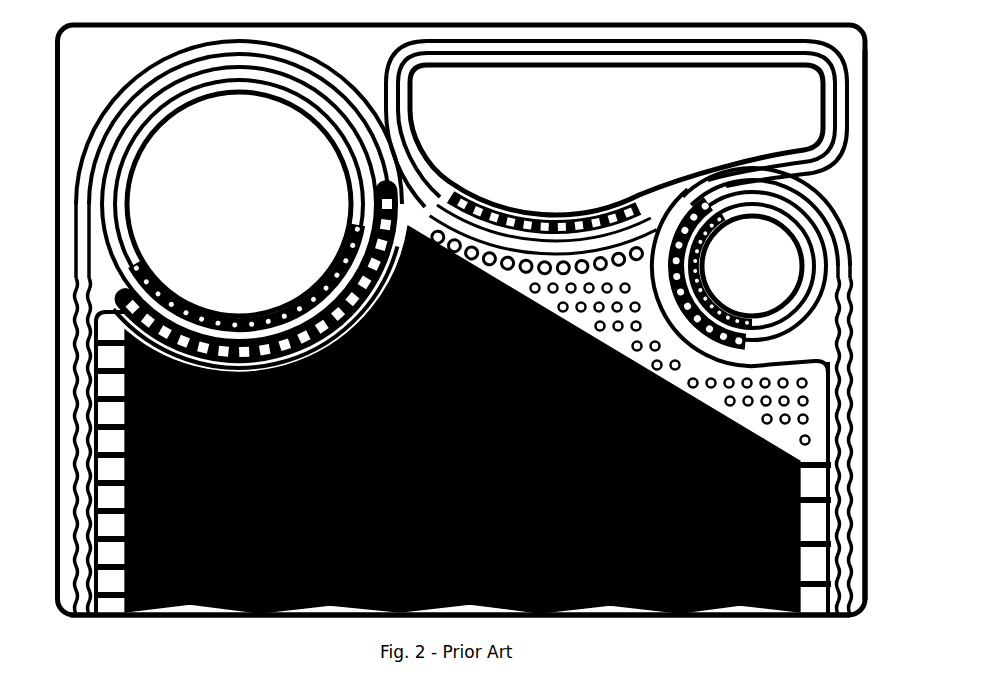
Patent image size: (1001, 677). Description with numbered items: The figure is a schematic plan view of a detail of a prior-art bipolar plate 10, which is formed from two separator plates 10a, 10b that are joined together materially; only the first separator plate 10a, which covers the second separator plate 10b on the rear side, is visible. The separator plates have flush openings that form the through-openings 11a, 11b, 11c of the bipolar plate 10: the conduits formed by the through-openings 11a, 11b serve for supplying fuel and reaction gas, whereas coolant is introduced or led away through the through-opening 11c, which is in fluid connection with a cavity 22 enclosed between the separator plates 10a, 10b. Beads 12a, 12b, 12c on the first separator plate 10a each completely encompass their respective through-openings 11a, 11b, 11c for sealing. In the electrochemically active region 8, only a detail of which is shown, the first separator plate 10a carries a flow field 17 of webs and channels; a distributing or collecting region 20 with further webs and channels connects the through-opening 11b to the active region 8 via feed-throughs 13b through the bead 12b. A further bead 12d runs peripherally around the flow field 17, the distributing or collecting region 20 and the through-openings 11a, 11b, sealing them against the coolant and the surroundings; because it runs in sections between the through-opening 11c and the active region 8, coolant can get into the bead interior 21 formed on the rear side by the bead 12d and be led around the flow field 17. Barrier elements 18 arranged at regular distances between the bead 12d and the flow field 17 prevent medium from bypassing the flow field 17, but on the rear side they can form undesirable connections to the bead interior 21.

The electrochemically active region 8 is at (44, 462).
The bipolar plate 10 is at (880, 167).
The first separator plate 10a is at (868, 591).
The second separator plate 10b is at (882, 540).
The through-opening 11a is at (769, 273).
The through-opening 11b is at (236, 192).
The through-opening 11c is at (616, 129).
The bead 12a is at (827, 268).
The bead 12b is at (97, 162).
The bead 12c is at (851, 96).
The further bead 12d is at (90, 312).
The feed-throughs 13b is at (262, 309).
The flow field 17 is at (713, 627).
The barrier elements 18 is at (104, 438).
The distributing or collecting region 20 is at (712, 396).
The bead interior 21 is at (846, 208).
The cavity 22 is at (522, 197).